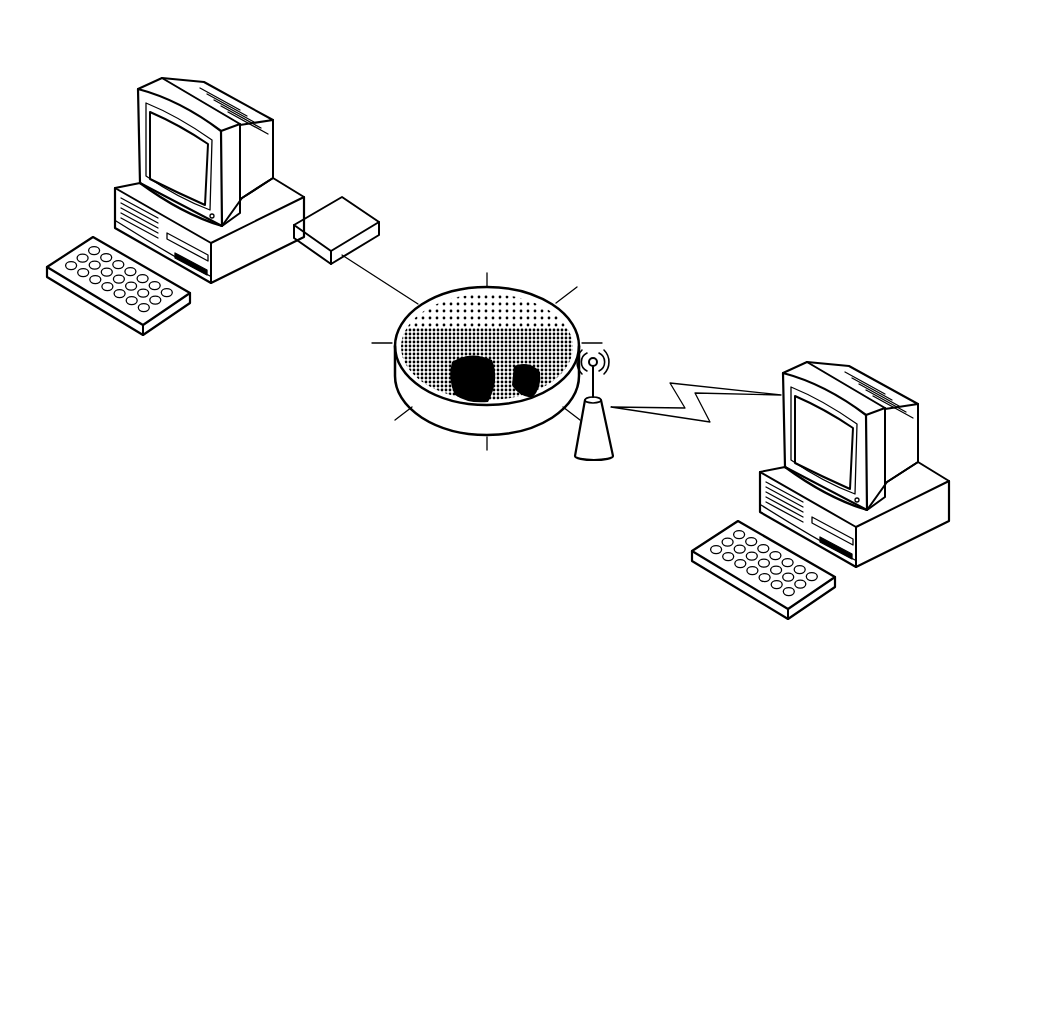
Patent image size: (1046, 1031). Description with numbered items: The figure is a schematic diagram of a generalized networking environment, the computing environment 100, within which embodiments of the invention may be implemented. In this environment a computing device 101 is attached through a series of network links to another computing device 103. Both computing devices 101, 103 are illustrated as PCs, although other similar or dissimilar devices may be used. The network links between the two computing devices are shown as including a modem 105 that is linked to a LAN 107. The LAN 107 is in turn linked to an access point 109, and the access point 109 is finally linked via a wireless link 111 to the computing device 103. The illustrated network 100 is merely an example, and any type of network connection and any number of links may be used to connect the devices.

The computing environment 100 is at (708, 167).
The computing device 101 is at (225, 97).
The computing device 103 is at (860, 370).
The modem 105 is at (342, 198).
The LAN 107 is at (547, 337).
The access point 109 is at (572, 460).
The wireless link 111 is at (693, 383).